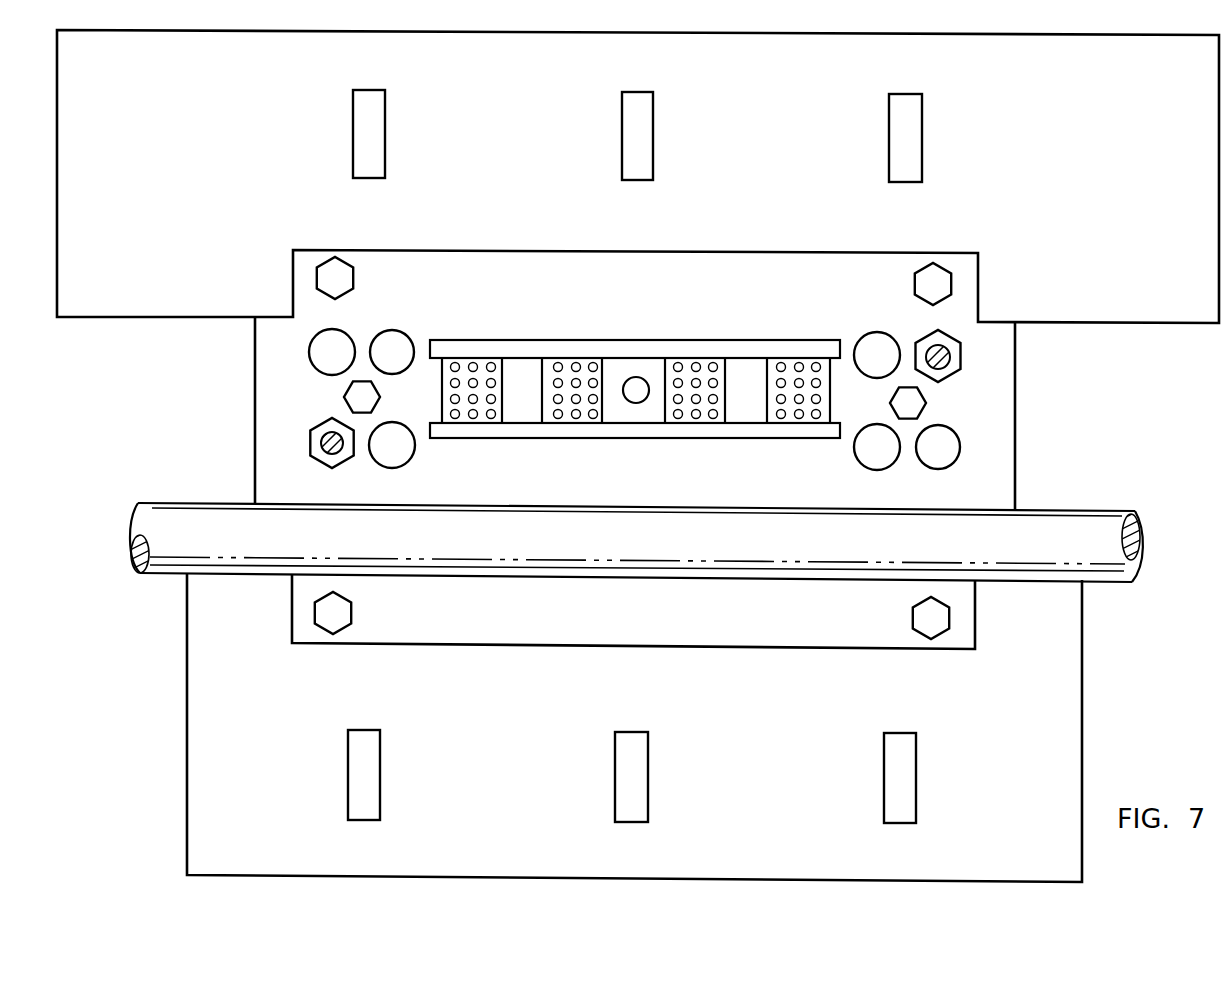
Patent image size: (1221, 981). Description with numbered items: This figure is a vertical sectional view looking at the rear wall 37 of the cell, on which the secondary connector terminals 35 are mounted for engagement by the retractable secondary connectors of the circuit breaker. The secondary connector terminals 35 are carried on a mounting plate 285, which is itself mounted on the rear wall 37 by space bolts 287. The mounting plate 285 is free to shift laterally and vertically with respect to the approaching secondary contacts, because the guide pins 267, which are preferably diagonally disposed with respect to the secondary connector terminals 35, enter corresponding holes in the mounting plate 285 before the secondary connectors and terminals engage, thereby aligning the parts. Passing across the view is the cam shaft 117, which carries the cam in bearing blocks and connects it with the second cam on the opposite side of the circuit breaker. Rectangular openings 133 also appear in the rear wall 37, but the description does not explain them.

The rear wall 37 is at (1109, 185).
The slot 133 is at (382, 148).
The space bolts 287 is at (337, 257).
The guide pins 267 is at (338, 456).
The mounting plate 285 is at (1002, 438).
The secondary connector terminals 35 is at (492, 373).
The cam shaft 117 is at (1103, 524).